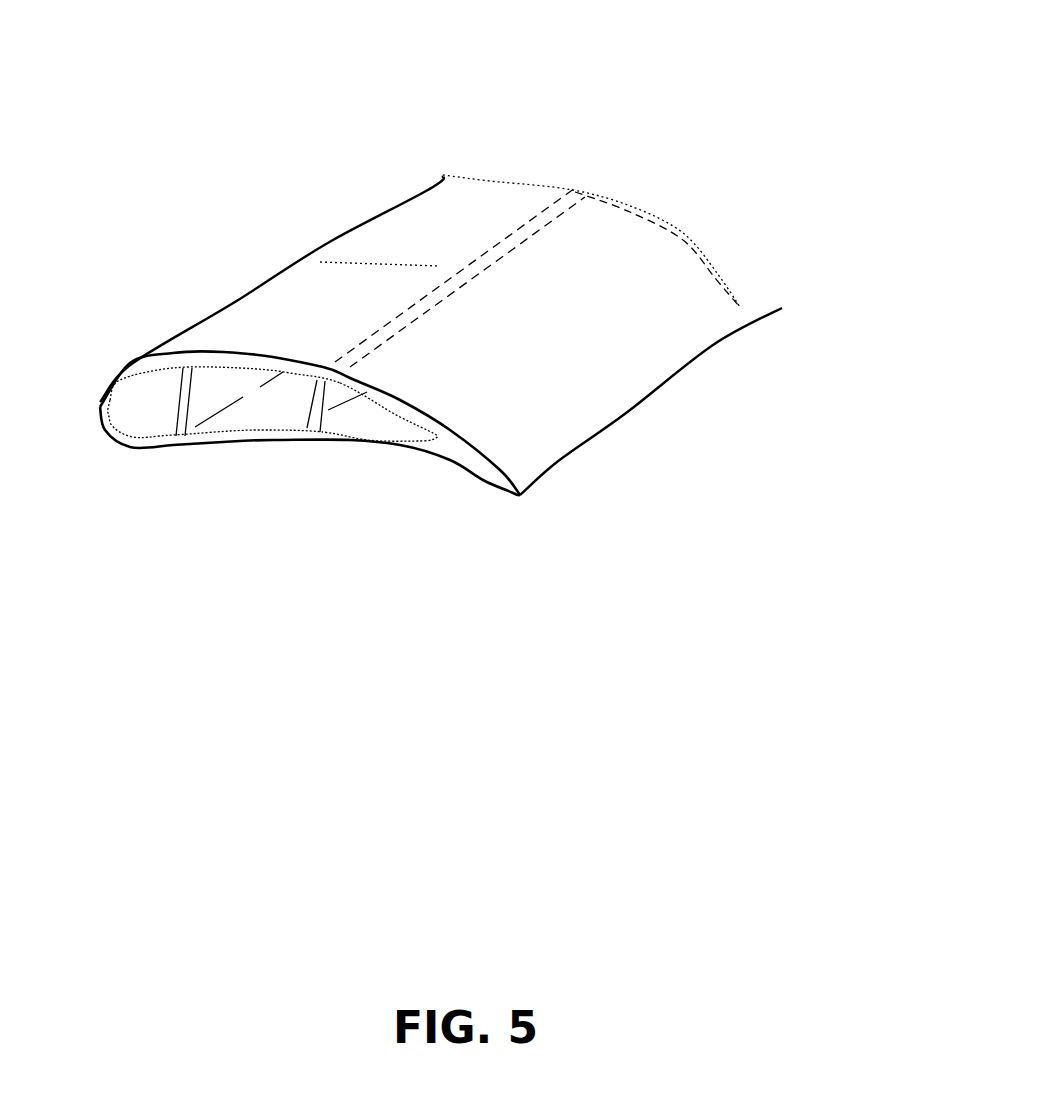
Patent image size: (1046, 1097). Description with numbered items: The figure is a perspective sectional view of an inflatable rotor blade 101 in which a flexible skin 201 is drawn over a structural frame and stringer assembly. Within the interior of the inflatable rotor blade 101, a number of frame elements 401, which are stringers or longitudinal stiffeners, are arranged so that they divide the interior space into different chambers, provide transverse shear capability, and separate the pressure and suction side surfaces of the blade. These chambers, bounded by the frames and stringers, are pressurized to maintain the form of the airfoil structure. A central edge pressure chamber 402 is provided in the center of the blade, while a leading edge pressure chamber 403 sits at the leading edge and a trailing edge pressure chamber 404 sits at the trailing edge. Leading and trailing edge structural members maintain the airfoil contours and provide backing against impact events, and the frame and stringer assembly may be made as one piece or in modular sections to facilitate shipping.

The inflatable rotor blade 101 is at (640, 35).
The flexible skin 201 is at (460, 225).
The frame elements 401 is at (342, 258).
The central edge pressure chamber 402 is at (265, 407).
The leading edge pressure chamber 403 is at (145, 402).
The trailing edge pressure chamber 404 is at (398, 423).